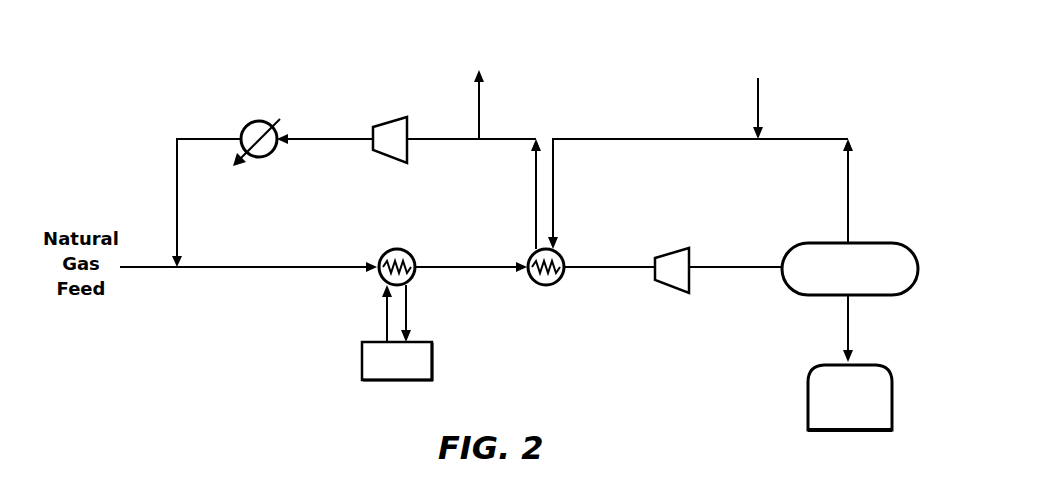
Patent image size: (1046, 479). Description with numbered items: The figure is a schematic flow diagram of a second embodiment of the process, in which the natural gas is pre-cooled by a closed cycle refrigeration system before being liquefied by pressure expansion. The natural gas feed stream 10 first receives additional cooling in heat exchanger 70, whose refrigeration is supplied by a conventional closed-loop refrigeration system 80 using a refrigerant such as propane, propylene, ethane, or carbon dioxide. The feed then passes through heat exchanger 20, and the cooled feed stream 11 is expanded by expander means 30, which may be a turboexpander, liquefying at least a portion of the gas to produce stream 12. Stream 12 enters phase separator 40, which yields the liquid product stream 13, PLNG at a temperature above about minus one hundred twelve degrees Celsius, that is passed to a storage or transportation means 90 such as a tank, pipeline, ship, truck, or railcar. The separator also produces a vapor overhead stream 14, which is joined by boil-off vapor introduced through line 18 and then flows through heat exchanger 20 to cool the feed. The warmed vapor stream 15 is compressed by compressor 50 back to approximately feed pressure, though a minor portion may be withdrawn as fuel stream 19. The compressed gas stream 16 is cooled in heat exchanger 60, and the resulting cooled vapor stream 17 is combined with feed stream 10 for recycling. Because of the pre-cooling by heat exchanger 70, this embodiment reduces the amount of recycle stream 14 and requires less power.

The natural gas feed stream 10 is at (140, 268).
The cooled feed stream 11 is at (603, 268).
The expanded stream 12 is at (733, 268).
The liquid product stream 13 is at (848, 318).
The vapor overhead stream 14 is at (848, 200).
The vapor stream 15 is at (536, 205).
The compressed gas stream 16 is at (322, 141).
The cooled vapor stream 17 is at (177, 205).
The boil-off vapor line 18 is at (758, 88).
The fuel stream 19 is at (480, 112).
The heat exchanger 20 is at (541, 286).
The expander means 30 is at (676, 250).
The phase separator 40 is at (882, 244).
The compressor 50 is at (390, 117).
The heat exchanger 60 is at (252, 122).
The heat exchanger 70 is at (386, 251).
The closed-loop refrigeration system 80 is at (432, 363).
The storage or transportation means 90 is at (808, 399).